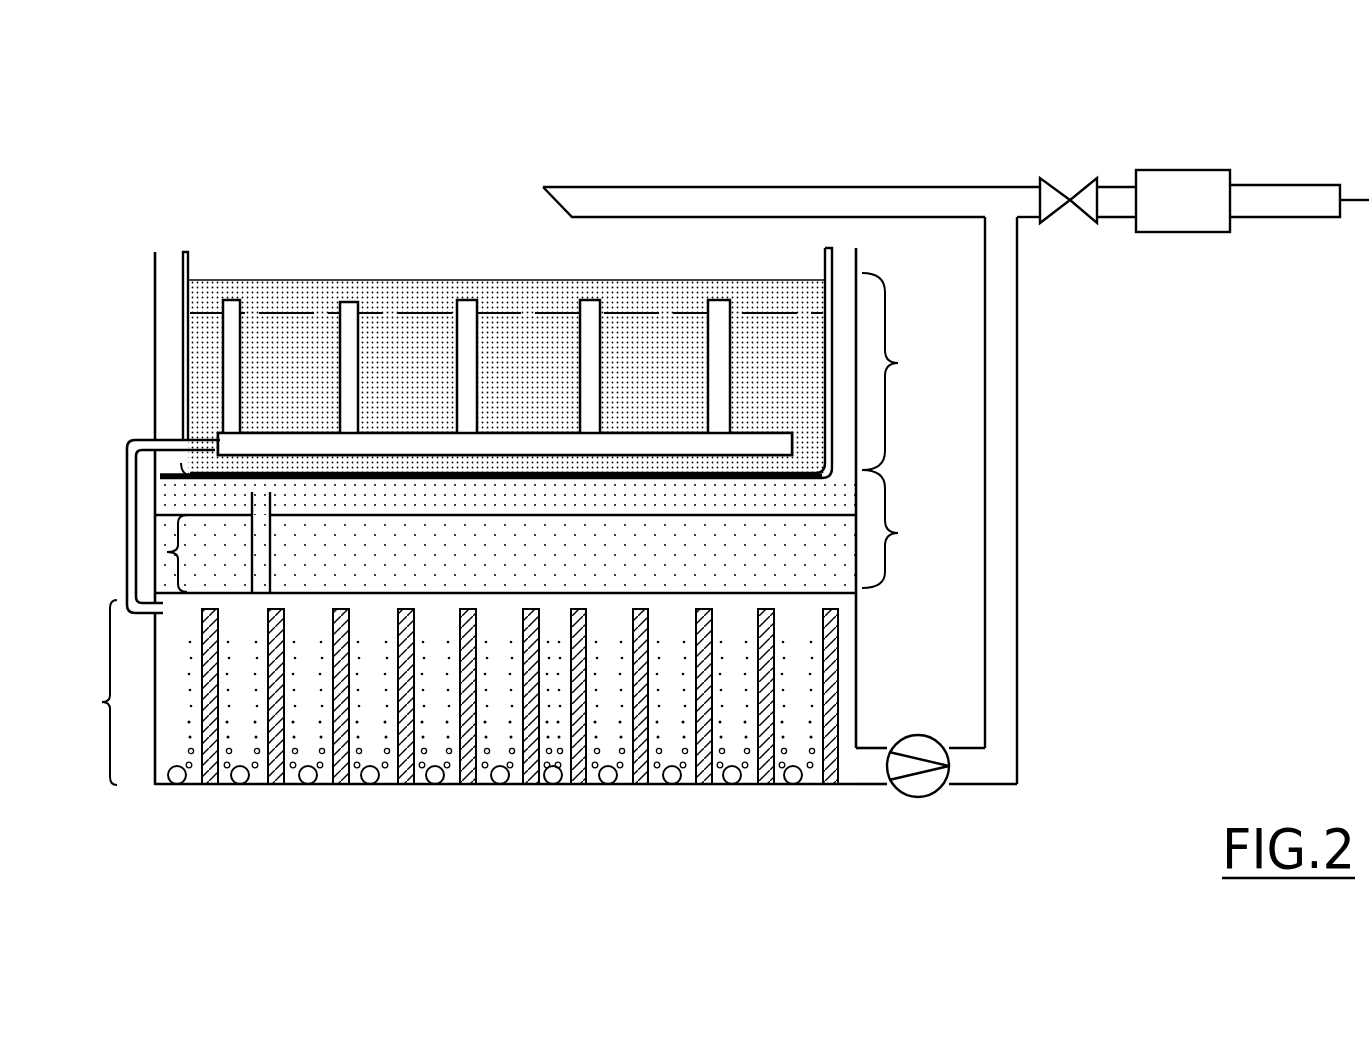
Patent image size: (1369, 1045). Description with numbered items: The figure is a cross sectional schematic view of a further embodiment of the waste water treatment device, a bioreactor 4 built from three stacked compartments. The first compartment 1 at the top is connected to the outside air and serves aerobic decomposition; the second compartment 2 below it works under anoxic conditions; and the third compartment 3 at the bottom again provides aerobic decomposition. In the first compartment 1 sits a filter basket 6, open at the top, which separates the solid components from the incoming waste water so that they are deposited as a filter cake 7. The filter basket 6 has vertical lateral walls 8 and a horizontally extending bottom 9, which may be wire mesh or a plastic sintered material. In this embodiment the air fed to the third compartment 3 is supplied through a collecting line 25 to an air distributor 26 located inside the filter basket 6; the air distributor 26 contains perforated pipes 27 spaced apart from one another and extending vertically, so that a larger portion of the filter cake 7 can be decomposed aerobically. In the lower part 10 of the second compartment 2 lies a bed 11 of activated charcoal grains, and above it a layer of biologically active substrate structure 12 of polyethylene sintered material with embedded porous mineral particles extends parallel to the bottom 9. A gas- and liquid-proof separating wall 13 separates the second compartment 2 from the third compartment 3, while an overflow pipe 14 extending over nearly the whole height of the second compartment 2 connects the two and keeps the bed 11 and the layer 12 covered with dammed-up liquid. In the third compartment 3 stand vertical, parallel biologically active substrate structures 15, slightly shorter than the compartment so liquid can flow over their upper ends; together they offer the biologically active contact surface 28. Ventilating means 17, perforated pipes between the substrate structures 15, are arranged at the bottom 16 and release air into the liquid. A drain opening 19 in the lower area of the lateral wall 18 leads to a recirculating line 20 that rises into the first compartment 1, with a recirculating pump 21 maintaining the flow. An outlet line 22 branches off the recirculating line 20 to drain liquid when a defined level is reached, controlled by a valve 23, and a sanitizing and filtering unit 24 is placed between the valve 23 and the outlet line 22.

The first compartment 1 is at (910, 360).
The second compartment 2 is at (910, 535).
The third compartment 3 is at (102, 703).
The bioreactor 4 is at (242, 808).
The filter basket 6 is at (843, 245).
The filter cake 7 is at (378, 290).
The lateral walls 8 is at (183, 315).
The bottom 9 is at (285, 470).
The lower part 10 is at (203, 553).
The bed of activated charcoal grains 11 is at (523, 537).
The biologically active substrate structure layer 12 is at (556, 490).
The separating wall 13 is at (393, 596).
The overflow pipe 14 is at (258, 539).
The biologically active substrate structures 15 is at (467, 770).
The bottom 16 is at (325, 787).
The ventilating means 17 is at (553, 786).
The lateral wall 18 is at (857, 650).
The drain opening 19 is at (845, 767).
The recirculating line 20 is at (1003, 525).
The recirculating pump 21 is at (920, 786).
The outlet line 22 is at (1262, 197).
The valve 23 is at (1052, 185).
The sanitizing and filtering unit 24 is at (1177, 200).
The collecting line 25 is at (127, 547).
The air distributor 26 is at (328, 343).
The perforated pipes 27 is at (465, 327).
The biologically active contact surface 28 is at (587, 672).